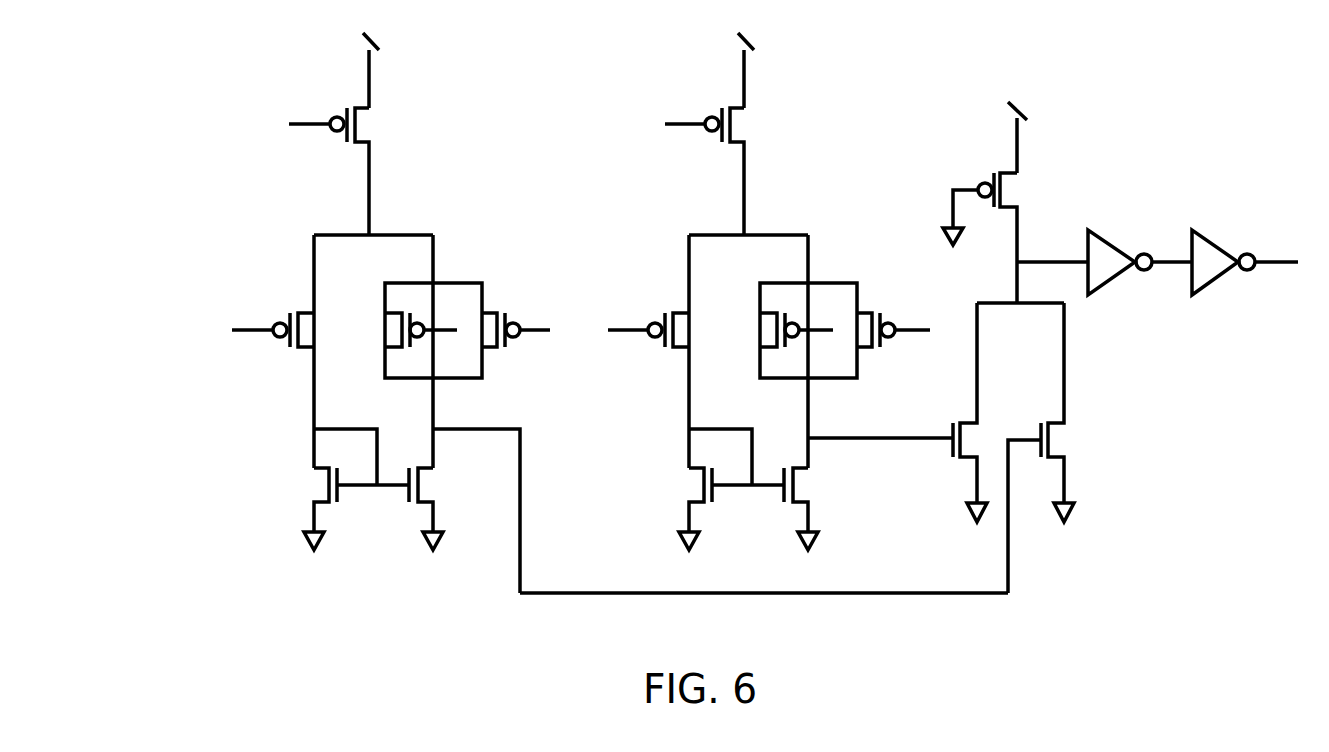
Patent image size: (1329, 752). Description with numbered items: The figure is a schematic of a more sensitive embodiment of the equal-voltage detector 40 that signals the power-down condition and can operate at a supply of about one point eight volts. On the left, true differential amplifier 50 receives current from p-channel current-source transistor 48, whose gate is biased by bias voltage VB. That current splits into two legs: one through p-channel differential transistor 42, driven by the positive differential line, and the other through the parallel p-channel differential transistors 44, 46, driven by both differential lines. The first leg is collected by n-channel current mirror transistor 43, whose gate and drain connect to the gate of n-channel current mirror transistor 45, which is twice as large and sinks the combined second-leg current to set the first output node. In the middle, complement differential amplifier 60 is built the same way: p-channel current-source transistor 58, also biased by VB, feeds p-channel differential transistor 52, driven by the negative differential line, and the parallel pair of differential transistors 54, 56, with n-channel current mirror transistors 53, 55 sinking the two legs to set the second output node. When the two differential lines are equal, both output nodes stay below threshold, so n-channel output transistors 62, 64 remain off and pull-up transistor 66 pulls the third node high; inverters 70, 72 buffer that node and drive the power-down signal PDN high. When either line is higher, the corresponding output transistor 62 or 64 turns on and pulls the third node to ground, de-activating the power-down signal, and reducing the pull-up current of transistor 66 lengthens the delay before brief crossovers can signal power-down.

The equal-voltage detector 40 is at (769, 346).
The p-channel differential transistor 42 is at (307, 330).
The n-channel current mirror transistor 43 is at (313, 487).
The p-channel differential transistor 44 is at (393, 330).
The n-channel current mirror transistor 45 is at (423, 485).
The p-channel differential transistor 46 is at (487, 348).
The p-channel current-source transistor 48 is at (360, 126).
The true differential amplifier 50 is at (393, 313).
The p-channel differential transistor 52 is at (682, 330).
The n-channel current mirror transistor 53 is at (688, 487).
The p-channel differential transistor 54 is at (768, 330).
The n-channel current mirror transistor 55 is at (798, 485).
The p-channel differential transistor 56 is at (862, 348).
The p-channel current-source transistor 58 is at (735, 126).
The complement differential amplifier 60 is at (780, 259).
The n-channel output transistor 62 is at (1057, 442).
The n-channel output transistor 64 is at (970, 433).
The pull-up transistor 66 is at (1008, 191).
The inverter 70 is at (1115, 275).
The inverter 72 is at (1220, 275).